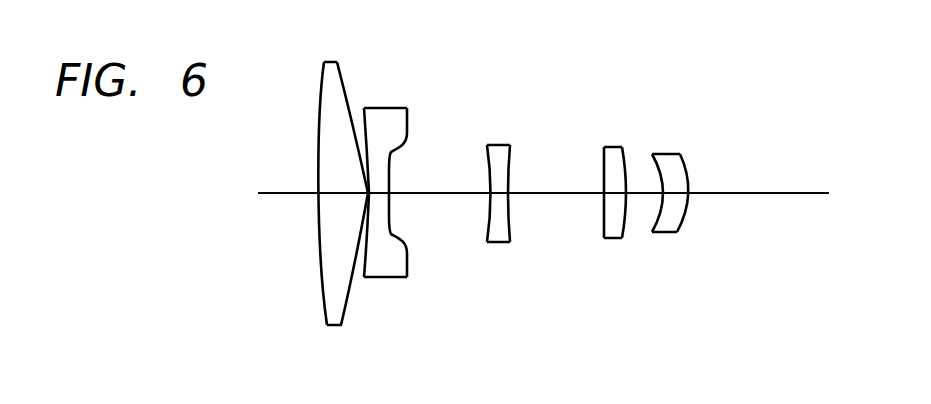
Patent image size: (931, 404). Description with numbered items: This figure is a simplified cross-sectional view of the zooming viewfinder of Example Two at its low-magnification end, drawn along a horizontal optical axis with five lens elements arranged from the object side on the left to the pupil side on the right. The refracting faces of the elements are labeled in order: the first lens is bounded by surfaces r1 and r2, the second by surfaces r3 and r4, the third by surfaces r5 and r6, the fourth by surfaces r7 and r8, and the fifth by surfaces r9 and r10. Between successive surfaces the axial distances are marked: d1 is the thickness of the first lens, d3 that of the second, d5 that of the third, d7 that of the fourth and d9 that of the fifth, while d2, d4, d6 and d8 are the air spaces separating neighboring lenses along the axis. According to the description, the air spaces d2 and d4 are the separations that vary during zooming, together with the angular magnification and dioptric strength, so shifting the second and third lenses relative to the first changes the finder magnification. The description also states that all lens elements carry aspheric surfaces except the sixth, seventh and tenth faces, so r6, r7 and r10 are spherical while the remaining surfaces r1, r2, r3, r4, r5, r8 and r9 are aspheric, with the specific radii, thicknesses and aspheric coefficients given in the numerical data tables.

The radius of curvature of first surface (lens 1 object side) r1 is at (320, 78).
The radius of curvature of second surface (lens 1 image side) r2 is at (341, 80).
The radius of curvature of third surface (lens 2 object side) r3 is at (362, 110).
The radius of curvature of fourth surface (lens 2 image side) r4 is at (403, 140).
The radius of curvature of fifth surface (lens 3 object side) r5 is at (489, 153).
The radius of curvature of sixth surface (lens 3 image side) r6 is at (512, 152).
The radius of curvature of seventh surface (lens 4 object side) r7 is at (603, 156).
The radius of curvature of eighth surface (lens 4 image side) r8 is at (623, 149).
The radius of curvature of ninth surface (lens 5 object side) r9 is at (652, 158).
The radius of curvature of tenth surface (lens 5 image side) r10 is at (683, 162).
The axial thickness of first lens d1 is at (335, 193).
The axial air space between first and second lens groups d2 is at (364, 195).
The axial thickness of second lens d3 is at (378, 195).
The axial air space between second and third lens groups d4 is at (443, 195).
The axial thickness of third lens d5 is at (500, 195).
The axial air space between third and fourth lenses d6 is at (555, 195).
The axial thickness of fourth lens d7 is at (615, 195).
The axial air space between fourth and fifth lenses d8 is at (642, 195).
The axial thickness of fifth lens d9 is at (670, 195).